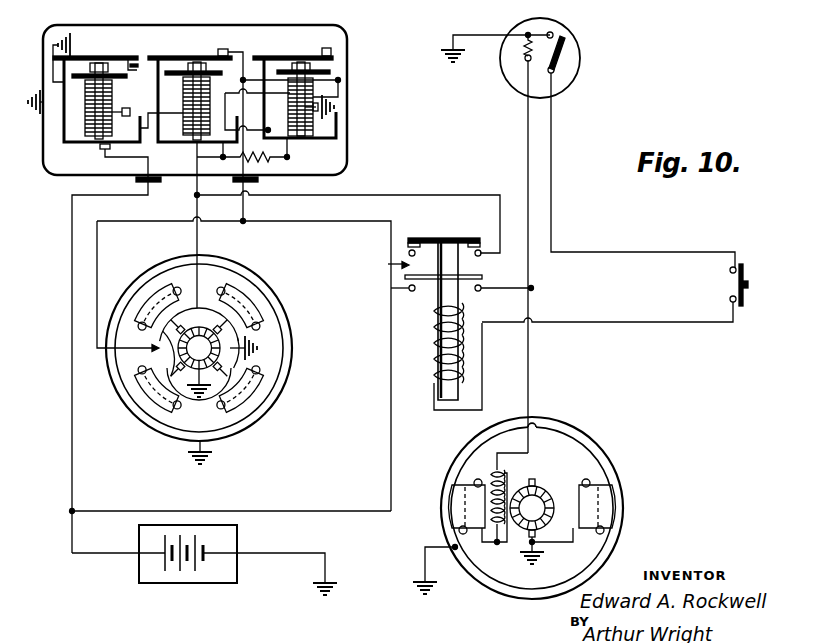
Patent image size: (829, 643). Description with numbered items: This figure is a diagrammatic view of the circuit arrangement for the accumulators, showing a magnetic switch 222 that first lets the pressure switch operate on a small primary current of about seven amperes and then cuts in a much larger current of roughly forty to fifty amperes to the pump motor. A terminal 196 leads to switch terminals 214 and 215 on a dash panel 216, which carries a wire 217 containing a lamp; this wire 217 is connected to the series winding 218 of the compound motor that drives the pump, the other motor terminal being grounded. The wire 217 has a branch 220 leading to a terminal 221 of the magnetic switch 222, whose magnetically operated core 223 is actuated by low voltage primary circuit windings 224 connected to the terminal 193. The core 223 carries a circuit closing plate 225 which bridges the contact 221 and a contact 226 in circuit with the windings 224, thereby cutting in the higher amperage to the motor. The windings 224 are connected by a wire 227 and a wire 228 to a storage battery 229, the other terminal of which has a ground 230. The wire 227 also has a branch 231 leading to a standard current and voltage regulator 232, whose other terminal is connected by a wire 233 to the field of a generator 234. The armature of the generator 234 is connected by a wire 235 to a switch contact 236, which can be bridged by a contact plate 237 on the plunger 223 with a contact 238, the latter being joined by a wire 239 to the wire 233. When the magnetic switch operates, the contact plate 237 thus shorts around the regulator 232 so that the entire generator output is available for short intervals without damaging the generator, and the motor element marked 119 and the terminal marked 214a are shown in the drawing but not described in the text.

The starting motor 119 is at (612, 467).
The terminal 193 is at (609, 309).
The terminal 196 is at (717, 285).
The switch terminal 214 is at (553, 33).
The ignition switch resistance terminal 214a is at (526, 62).
The switch terminal 215 is at (555, 70).
The dash panel 216 is at (560, 82).
The wire 217 is at (531, 305).
The series winding 218 is at (497, 472).
The branch 220 is at (510, 285).
The terminal 221 is at (481, 291).
The magnetic switch 222 is at (378, 266).
The magnetically operated core 223 is at (446, 250).
The low voltage primary circuit windings 224 is at (464, 357).
The circuit closing plate 225 is at (404, 277).
The contact 226 is at (411, 292).
The wire 227 is at (174, 511).
The wire 228 is at (96, 556).
The storage battery 229 is at (189, 578).
The ground 230 is at (330, 567).
The branch 231 is at (72, 391).
The current and voltage regulator 232 is at (45, 160).
The wire 233 is at (201, 247).
The generator 234 is at (284, 317).
The wire 235 is at (97, 265).
The switch contact 236 is at (409, 251).
The contact plate 237 is at (482, 243).
The contact 238 is at (481, 254).
The wire 239 is at (396, 193).